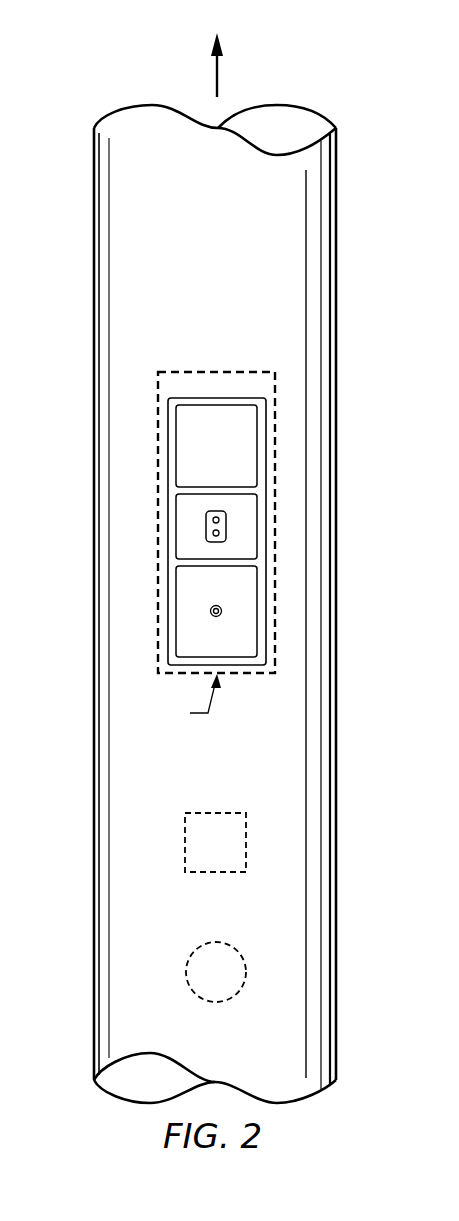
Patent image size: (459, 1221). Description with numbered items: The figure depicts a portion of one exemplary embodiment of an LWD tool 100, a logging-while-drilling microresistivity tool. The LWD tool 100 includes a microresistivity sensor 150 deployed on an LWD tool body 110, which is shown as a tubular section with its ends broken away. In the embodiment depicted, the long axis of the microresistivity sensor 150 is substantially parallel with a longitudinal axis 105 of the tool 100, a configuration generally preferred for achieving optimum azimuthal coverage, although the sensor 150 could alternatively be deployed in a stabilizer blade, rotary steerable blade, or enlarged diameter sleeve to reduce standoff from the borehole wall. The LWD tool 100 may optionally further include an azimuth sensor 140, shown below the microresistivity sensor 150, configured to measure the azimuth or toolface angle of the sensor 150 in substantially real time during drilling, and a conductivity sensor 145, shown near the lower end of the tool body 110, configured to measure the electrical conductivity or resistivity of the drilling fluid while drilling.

The LWD tool 100 is at (138, 61).
The longitudinal axis 105 is at (219, 73).
The LWD tool body 110 is at (95, 605).
The azimuth sensor 140 is at (185, 843).
The conductivity sensor 145 is at (188, 982).
The microresistivity sensor 150 is at (213, 397).